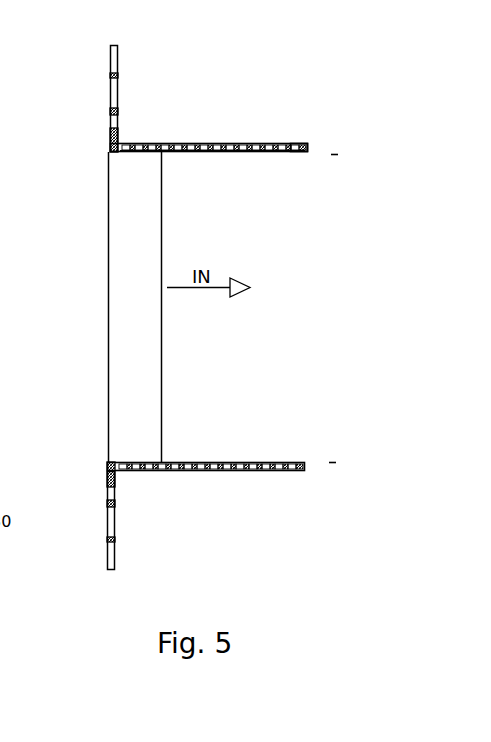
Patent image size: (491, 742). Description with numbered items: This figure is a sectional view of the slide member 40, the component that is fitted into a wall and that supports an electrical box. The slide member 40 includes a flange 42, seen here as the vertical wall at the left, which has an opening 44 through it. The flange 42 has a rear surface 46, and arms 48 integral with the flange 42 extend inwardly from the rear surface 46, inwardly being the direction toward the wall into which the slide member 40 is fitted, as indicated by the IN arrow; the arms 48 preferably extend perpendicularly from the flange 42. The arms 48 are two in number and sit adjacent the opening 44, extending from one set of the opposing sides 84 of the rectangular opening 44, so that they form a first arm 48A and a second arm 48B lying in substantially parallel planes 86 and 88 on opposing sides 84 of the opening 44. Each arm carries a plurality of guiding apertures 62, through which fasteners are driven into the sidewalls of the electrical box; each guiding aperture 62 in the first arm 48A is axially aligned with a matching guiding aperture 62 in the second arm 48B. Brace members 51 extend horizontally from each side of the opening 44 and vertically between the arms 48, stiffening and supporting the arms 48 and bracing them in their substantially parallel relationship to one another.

The slide member 40 is at (210, 87).
The flange 42 is at (110, 54).
The opening 44 is at (120, 254).
The rear surface 46 is at (134, 553).
The arms 48 is at (300, 152).
The first arm 48A is at (300, 152).
The second arm 48B is at (295, 471).
The brace members 51 is at (147, 292).
The guiding apertures 62 is at (218, 152).
The opposing sides 84 is at (108, 152).
The plane 86 is at (322, 153).
The plane 88 is at (318, 462).